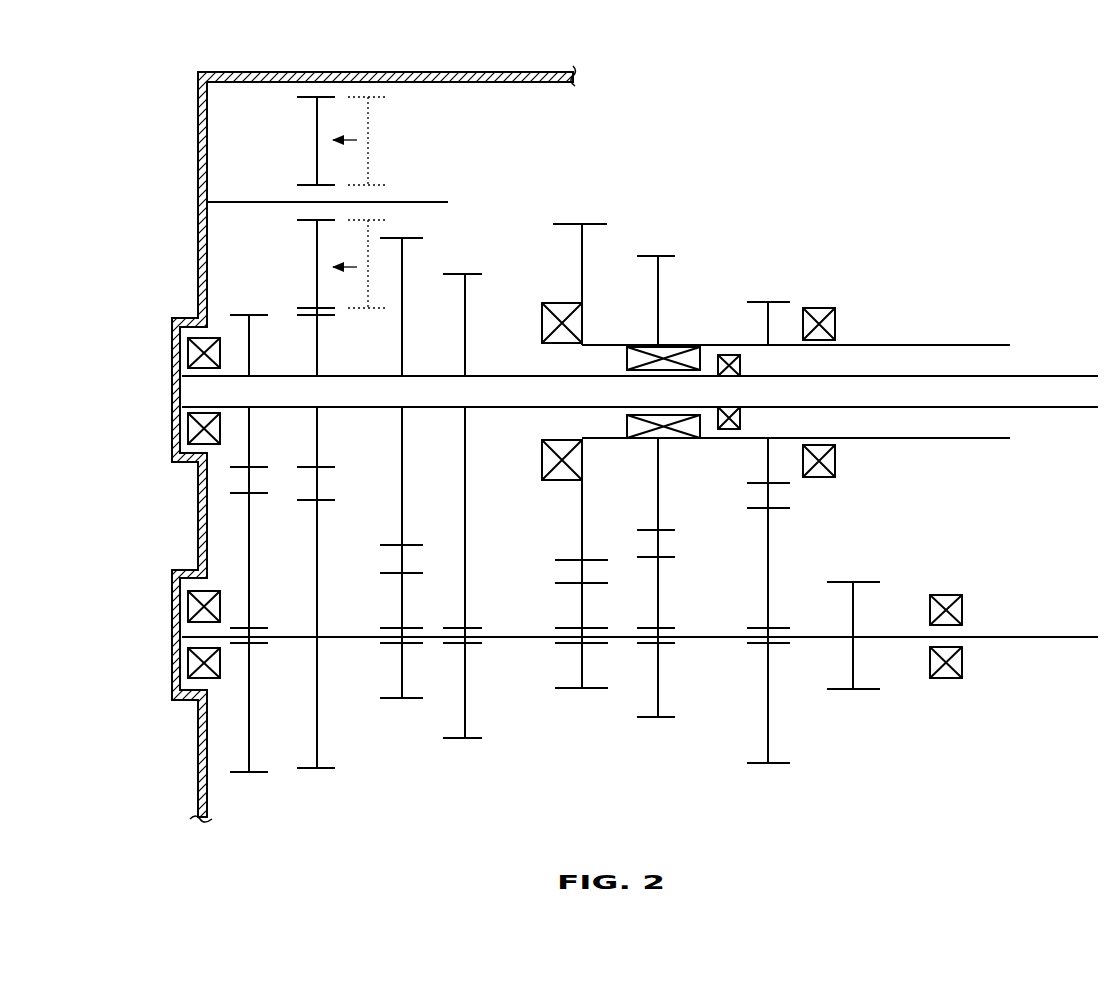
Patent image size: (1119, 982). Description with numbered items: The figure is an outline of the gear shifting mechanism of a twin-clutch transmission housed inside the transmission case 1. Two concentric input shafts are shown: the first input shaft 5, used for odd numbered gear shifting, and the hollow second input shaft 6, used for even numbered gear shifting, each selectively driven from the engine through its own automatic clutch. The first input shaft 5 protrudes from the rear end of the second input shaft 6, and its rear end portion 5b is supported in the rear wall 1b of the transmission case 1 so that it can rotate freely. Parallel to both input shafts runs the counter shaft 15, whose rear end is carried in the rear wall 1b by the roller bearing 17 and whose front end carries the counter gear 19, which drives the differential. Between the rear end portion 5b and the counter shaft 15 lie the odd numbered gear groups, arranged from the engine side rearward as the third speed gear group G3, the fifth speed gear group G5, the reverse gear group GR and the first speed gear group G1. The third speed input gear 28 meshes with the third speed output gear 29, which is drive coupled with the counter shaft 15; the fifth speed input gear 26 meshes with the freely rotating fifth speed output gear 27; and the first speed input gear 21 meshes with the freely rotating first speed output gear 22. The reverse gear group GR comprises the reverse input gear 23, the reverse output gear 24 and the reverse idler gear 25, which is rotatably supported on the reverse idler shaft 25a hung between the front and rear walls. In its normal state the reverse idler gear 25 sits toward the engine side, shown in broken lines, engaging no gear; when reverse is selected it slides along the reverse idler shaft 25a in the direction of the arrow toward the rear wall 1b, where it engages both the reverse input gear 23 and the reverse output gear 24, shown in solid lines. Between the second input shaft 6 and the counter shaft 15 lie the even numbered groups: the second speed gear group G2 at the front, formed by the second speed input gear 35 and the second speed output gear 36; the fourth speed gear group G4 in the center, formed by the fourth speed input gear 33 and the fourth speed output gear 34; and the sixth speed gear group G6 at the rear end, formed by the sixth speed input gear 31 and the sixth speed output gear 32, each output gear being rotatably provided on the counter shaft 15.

The transmission case 1 is at (507, 70).
The rear wall 1b is at (198, 140).
The first input shaft 5 is at (1052, 375).
The rear end portion 5b is at (288, 375).
The second input shaft 6 is at (905, 345).
The counter shaft 15 is at (995, 635).
The roller bearing 17 is at (187, 660).
The counter gear 19 is at (870, 692).
The first speed input gear 21 is at (239, 314).
The first speed output gear 22 is at (262, 777).
The reverse input gear 23 is at (306, 313).
The reverse output gear 24 is at (327, 772).
The reverse idler gear 25 is at (304, 97).
The reverse idler shaft 25a is at (277, 202).
The fifth speed input gear 26 is at (415, 237).
The fifth speed output gear 27 is at (385, 701).
The third speed input gear 28 is at (477, 274).
The third speed output gear 29 is at (480, 742).
The sixth speed input gear 31 is at (590, 223).
The sixth speed output gear 32 is at (562, 691).
The fourth speed input gear 33 is at (665, 256).
The fourth speed output gear 34 is at (642, 720).
The second speed input gear 35 is at (776, 302).
The second speed output gear 36 is at (782, 766).
The first speed gear group G1 is at (259, 303).
The second speed gear group G2 is at (758, 292).
The third speed gear group G3 is at (465, 262).
The fourth speed gear group G4 is at (651, 247).
The fifth speed gear group G5 is at (402, 230).
The sixth speed gear group G6 is at (571, 214).
The reverse gear group GR is at (333, 342).